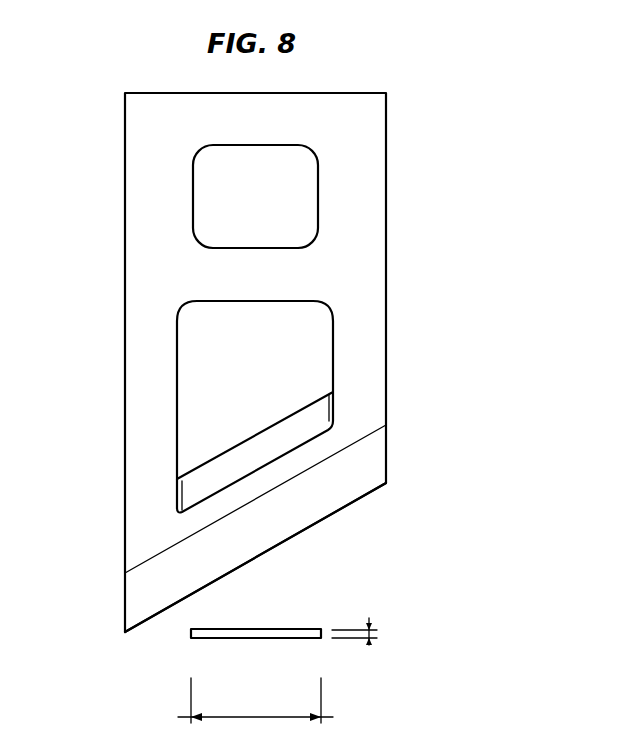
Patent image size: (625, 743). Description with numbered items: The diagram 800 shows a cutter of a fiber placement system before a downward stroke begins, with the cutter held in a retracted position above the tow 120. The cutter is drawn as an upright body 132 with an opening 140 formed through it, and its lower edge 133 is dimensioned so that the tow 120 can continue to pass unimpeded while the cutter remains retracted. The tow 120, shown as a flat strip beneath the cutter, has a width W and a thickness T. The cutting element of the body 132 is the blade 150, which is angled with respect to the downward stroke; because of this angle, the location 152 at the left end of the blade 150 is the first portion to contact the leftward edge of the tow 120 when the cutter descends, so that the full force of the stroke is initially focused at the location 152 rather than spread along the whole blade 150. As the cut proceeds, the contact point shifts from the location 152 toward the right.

The diagram 800 is at (458, 424).
The panel body 132 is at (137, 267).
The opening 140 is at (268, 444).
The blade 150 is at (273, 523).
The lower edge 133 is at (348, 503).
The location 152 is at (185, 606).
The tow 120 is at (305, 639).